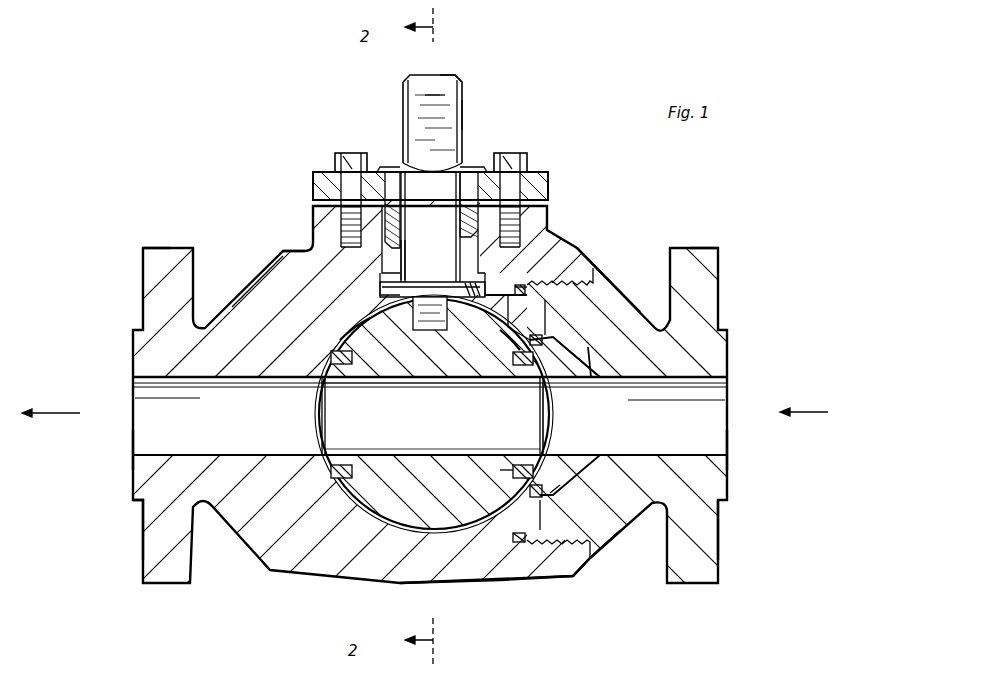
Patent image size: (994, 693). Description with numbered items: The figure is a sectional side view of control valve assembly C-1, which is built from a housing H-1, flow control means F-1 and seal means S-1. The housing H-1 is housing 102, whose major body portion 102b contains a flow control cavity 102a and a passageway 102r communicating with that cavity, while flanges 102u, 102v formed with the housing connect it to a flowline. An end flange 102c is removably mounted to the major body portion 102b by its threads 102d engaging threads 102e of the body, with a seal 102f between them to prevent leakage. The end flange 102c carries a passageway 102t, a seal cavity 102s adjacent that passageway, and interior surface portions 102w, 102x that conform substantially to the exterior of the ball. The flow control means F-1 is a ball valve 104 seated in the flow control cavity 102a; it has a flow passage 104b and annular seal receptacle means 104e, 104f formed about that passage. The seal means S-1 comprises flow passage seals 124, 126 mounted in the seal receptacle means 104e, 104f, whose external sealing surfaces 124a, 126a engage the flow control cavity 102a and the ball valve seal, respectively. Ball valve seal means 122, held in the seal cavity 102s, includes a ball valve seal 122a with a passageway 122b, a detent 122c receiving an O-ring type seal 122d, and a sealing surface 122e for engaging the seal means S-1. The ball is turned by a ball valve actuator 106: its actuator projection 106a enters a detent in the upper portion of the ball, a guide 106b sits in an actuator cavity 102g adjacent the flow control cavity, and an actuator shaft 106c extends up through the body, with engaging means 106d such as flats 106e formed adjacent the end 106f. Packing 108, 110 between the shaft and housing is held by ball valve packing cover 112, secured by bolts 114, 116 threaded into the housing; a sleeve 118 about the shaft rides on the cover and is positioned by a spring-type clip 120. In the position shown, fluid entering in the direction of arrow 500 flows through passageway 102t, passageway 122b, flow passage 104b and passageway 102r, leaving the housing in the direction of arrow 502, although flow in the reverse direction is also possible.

The housing 102 is at (228, 535).
The flow control cavity 102a is at (478, 532).
The major body portion 102b is at (135, 545).
The end flange 102c is at (727, 560).
The threads 102d is at (527, 542).
The threads 102e is at (588, 553).
The seal 102f is at (522, 287).
The actuator cavity 102g is at (467, 281).
The passageway 102r is at (152, 455).
The seal cavity 102s is at (590, 360).
The passageway 102t is at (713, 455).
The flange 102u is at (152, 247).
The flange 102v is at (710, 249).
The interior surface portion 102w is at (330, 348).
The interior surface portion 102x is at (500, 478).
The ball valve 104 is at (388, 503).
The flow passage 104b is at (452, 418).
The seal receptacle means 104e is at (266, 266).
The seal receptacle means 104f is at (577, 363).
The ball valve actuator 106 is at (465, 86).
The actuator projection 106a is at (427, 325).
The guide 106b is at (525, 280).
The actuator shaft 106c is at (440, 249).
The engaging means 106d is at (465, 112).
The flats 106e is at (452, 80).
The end 106f is at (440, 94).
The packing 108 is at (524, 160).
The packing 110 is at (468, 240).
The ball valve packing cover 112 is at (314, 178).
The bolt 114 is at (350, 152).
The bolt 116 is at (550, 170).
The sleeve 118 is at (388, 165).
The clip 120 is at (472, 200).
The ball valve seal means 122 is at (545, 540).
The ball valve seal 122a is at (557, 478).
The passageway 122b is at (586, 413).
The detent 122c is at (533, 520).
The seal 122d is at (548, 285).
The sealing surface 122e is at (527, 380).
The flow passage seal 124 is at (346, 480).
The external sealing surface 124a is at (335, 478).
The flow passage seal 126 is at (597, 395).
The external sealing surface 126a is at (563, 490).
The arrow 500 is at (810, 412).
The arrow 502 is at (56, 411).
The control valve assembly C-1 is at (212, 108).
The housing H-1 is at (300, 262).
The seal means S-1 is at (350, 520).
The flow control means F-1 is at (365, 517).